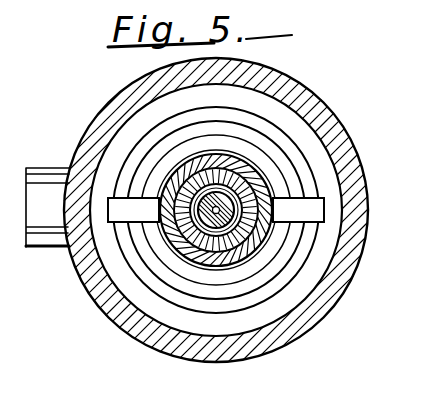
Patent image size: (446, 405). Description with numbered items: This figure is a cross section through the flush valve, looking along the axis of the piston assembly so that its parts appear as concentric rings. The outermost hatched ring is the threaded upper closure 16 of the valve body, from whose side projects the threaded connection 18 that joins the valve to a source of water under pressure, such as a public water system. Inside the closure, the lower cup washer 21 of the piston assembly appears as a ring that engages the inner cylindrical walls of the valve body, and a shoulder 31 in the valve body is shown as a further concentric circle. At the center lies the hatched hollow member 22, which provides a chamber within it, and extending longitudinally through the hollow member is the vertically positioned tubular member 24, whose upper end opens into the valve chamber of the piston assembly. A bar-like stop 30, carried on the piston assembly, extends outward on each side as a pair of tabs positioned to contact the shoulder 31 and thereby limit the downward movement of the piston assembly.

The threaded upper closure 16 is at (371, 257).
The threaded connection 18 is at (55, 243).
The lower cup washer 21 is at (279, 290).
The hollow member 22 is at (221, 266).
The tubular member 24 is at (238, 202).
The bar-like stop 30 is at (324, 211).
The shoulder 31 is at (290, 283).